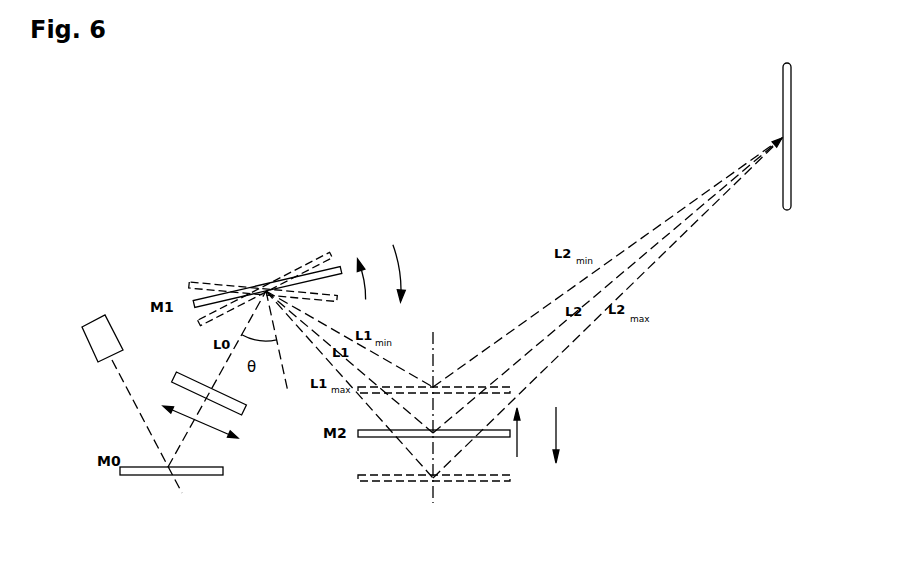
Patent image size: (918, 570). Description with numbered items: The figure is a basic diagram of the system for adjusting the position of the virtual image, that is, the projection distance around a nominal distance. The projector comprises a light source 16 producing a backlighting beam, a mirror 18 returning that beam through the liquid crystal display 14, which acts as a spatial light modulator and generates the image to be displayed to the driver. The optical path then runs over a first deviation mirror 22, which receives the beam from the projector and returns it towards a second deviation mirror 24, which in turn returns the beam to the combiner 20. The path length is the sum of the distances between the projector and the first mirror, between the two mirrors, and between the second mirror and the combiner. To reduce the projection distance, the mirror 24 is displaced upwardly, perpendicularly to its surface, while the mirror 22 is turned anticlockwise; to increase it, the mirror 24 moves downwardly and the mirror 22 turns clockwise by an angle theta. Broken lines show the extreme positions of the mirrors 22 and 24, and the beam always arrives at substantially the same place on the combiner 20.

The liquid crystal display 14 is at (240, 417).
The light source 16 is at (85, 335).
The mirror 18 is at (143, 477).
The combiner 20 is at (788, 212).
The first deviation mirror 22 is at (343, 265).
The second deviation mirror 24 is at (360, 438).